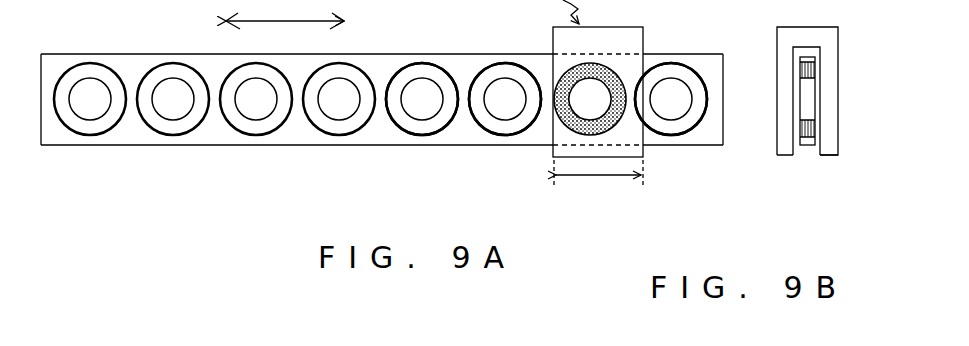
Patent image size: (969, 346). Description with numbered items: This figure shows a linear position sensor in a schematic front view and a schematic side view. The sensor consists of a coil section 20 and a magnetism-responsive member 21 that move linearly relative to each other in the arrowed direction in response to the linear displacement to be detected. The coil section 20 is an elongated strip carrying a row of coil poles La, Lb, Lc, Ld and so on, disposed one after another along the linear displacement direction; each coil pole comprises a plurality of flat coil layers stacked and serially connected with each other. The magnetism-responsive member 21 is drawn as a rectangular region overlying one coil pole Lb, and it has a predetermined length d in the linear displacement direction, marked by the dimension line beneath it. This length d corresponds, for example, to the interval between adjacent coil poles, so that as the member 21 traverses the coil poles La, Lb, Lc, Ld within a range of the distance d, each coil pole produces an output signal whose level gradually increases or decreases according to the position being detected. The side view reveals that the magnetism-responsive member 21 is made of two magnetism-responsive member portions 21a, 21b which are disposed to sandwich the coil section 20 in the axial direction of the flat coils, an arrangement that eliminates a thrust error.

In FIG. 9A, the coil section 20 is at (481, 50).
In FIG. 9B, the coil section 20 is at (807, 146).
In FIG. 9B, the magnetism-responsive member 21 is at (781, 27).
In FIG. 9A, the magnetism-responsive member portion 21a is at (570, 153).
In FIG. 9B, the magnetism-responsive member portion 21a is at (780, 159).
In FIG. 9B, the magnetism-responsive member portion 21b is at (826, 160).
In FIG. 9A, the coil pole La is at (673, 135).
In FIG. 9A, the coil pole Lb is at (614, 78).
In FIG. 9A, the coil pole Lc is at (505, 135).
In FIG. 9A, the coil pole Ld is at (423, 135).
In FIG. 9A, the predetermined length d is at (598, 185).